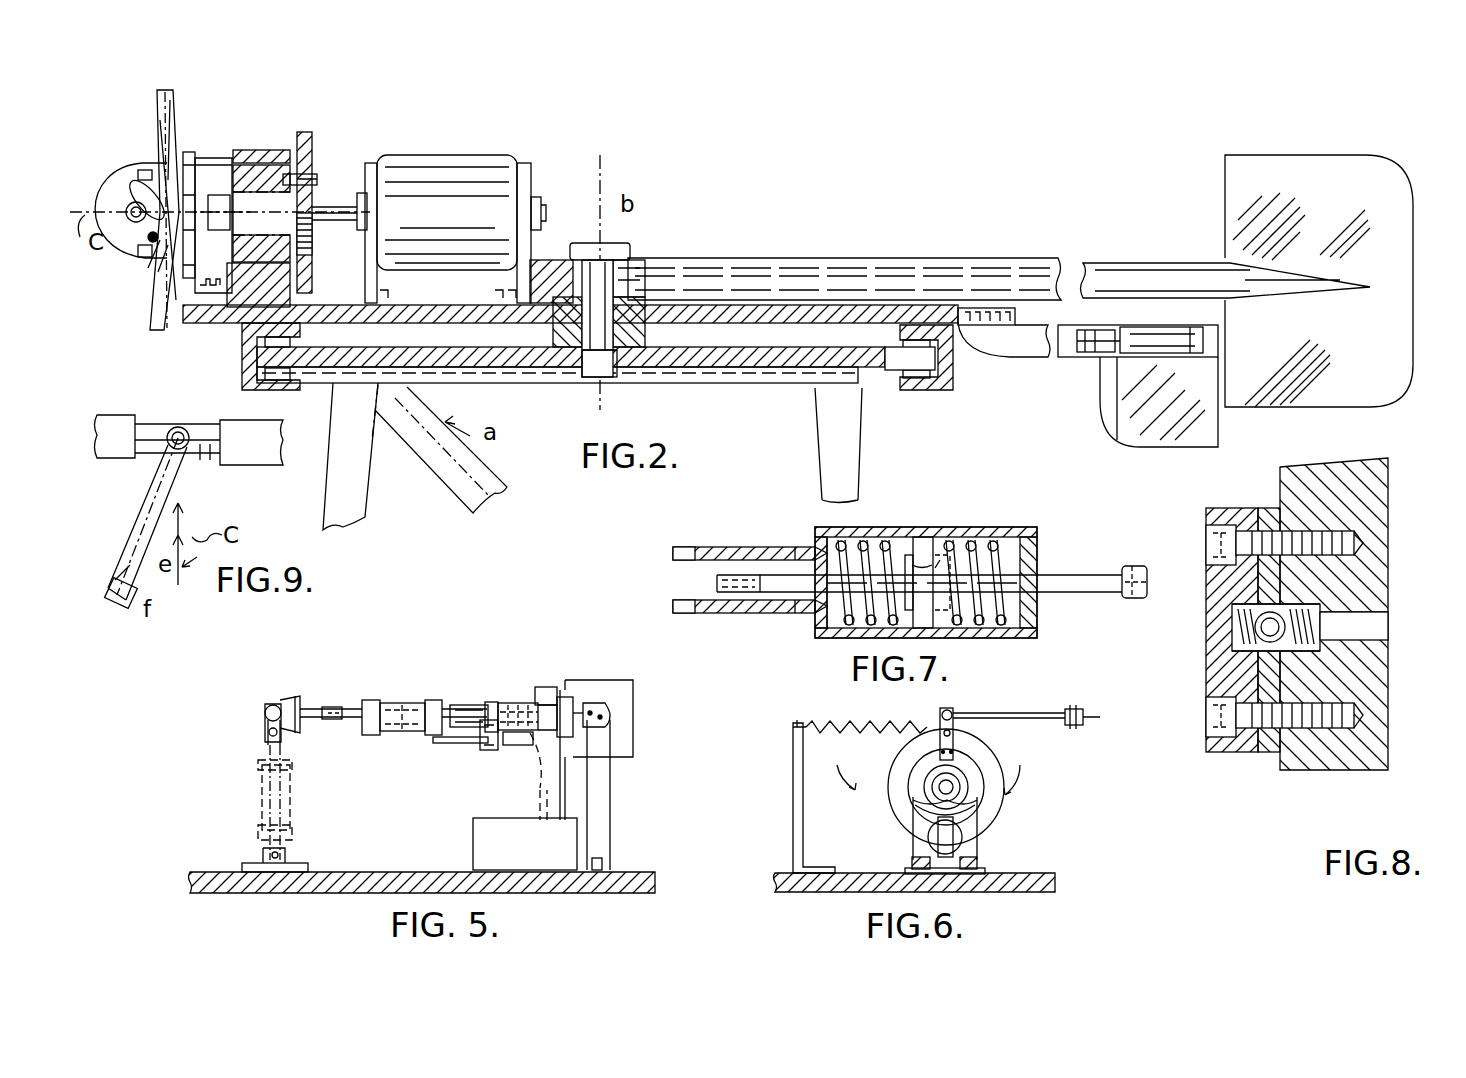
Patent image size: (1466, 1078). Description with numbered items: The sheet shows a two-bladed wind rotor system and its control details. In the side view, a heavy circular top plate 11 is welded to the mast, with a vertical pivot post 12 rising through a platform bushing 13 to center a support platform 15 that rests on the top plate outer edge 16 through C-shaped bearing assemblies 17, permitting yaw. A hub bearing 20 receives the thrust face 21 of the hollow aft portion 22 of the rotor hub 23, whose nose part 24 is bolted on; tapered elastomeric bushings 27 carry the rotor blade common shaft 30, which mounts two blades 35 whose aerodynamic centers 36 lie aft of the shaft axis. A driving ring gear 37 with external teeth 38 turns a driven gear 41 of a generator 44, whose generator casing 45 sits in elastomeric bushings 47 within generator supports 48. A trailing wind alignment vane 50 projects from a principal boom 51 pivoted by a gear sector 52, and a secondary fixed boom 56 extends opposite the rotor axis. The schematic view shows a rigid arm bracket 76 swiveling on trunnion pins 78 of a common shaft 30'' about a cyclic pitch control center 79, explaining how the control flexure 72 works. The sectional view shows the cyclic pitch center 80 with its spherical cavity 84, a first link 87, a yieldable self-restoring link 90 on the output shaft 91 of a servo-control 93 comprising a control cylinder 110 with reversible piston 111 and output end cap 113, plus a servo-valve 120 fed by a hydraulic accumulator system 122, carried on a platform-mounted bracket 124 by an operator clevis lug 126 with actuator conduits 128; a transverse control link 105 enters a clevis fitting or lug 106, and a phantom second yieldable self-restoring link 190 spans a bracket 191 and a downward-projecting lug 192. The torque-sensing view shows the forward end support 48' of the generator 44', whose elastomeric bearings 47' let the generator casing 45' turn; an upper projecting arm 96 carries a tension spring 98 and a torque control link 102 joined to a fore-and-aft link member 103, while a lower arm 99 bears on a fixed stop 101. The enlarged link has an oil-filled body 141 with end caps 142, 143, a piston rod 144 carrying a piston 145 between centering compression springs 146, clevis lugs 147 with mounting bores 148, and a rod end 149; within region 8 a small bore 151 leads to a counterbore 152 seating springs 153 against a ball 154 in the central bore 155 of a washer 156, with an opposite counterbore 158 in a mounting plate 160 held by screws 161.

In FIG. 2, the top plate 11 is at (527, 370).
In FIG. 2, the vertical pivot post 12 is at (605, 380).
In FIG. 2, the platform bushing 13 is at (645, 325).
In FIG. 2, the support platform 15 is at (195, 324).
In FIG. 2, the top plate outer edge 16 is at (262, 343).
In FIG. 2, the C-shaped bearing assemblies 17 is at (278, 391).
In FIG. 2, the hub bearing 20 is at (222, 152).
In FIG. 2, the thrust face 21 is at (214, 164).
In FIG. 2, the hollow aft portion 22 is at (245, 191).
In FIG. 2, the rotor hub 23 is at (291, 145).
In FIG. 2, the nose part 24 is at (122, 166).
In FIG. 2, the tapered elastomeric bushings 27 is at (136, 219).
In FIG. 2, the rotor blade common shaft 30 is at (191, 195).
In FIG. 2, the blades 35 is at (176, 112).
In FIG. 2, the aerodynamic centers 36 is at (153, 276).
In FIG. 2, the driving ring gear 37 is at (317, 176).
In FIG. 2, the external teeth 38 is at (312, 140).
In FIG. 2, the driven gear 41 is at (312, 252).
In FIG. 2, the generator 44 is at (447, 191).
In FIG. 2, the generator casing 45 is at (447, 215).
In FIG. 2, the elastomeric bushings 47 is at (446, 199).
In FIG. 2, the generator supports 48 is at (448, 233).
In FIG. 2, the trailing wind alignment vane 50 is at (1247, 281).
In FIG. 2, the principal boom 51 is at (935, 258).
In FIG. 2, the gear sector 52 is at (549, 258).
In FIG. 2, the secondary fixed boom 56 is at (1018, 357).
In FIG. 9, the rotor blade common shaft 30'' is at (183, 429).
In FIG. 9, the rigid arm bracket 76 is at (182, 509).
In FIG. 9, the trunnion pins 78 is at (180, 430).
In FIG. 9, the cyclic pitch control center 79 is at (186, 463).
In FIG. 5, the control flexure 72 is at (302, 695).
In FIG. 5, the cyclic pitch center 80 is at (266, 710).
In FIG. 5, the spherical cavity 84 is at (262, 728).
In FIG. 5, the first link 87 is at (300, 722).
In FIG. 5, the yieldable self-restoring link 90 is at (410, 693).
In FIG. 5, the output shaft 91 is at (483, 702).
In FIG. 5, the servo-control 93 is at (526, 694).
In FIG. 5, the transverse control link 105 is at (443, 741).
In FIG. 5, the clevis fitting or lug 106 is at (518, 745).
In FIG. 5, the control cylinder 110 is at (513, 693).
In FIG. 5, the reversible piston 111 is at (545, 756).
In FIG. 5, the output end cap 113 is at (485, 740).
In FIG. 5, the servo-valve 120 is at (570, 673).
In FIG. 5, the hydraulic accumulator system 122 is at (461, 842).
In FIG. 5, the platform-mounted bracket 124 is at (610, 848).
In FIG. 5, the operator clevis lug 126 is at (608, 703).
In FIG. 5, the actuator conduits 128 is at (552, 687).
In FIG. 5, the piston rod 144 is at (368, 728).
In FIG. 7, the piston rod 144 is at (730, 575).
In FIG. 5, the clevis lugs 147 is at (450, 707).
In FIG. 7, the clevis lugs 147 is at (742, 547).
In FIG. 5, the second yieldable self-restoring link 190 is at (303, 805).
In FIG. 5, the bracket 191 is at (295, 865).
In FIG. 5, the downward-projecting lug 192 is at (262, 732).
In FIG. 6, the tension spring 98 is at (893, 723).
In FIG. 6, the torque control link 102 is at (1009, 715).
In FIG. 6, the fore-and-aft link member 103 is at (1090, 715).
In FIG. 6, the upper projecting arm 96 is at (958, 733).
In FIG. 6, the generator casing 45' is at (928, 787).
In FIG. 6, the elastomeric bearings 47' is at (987, 771).
In FIG. 6, the generator 44' is at (992, 787).
In FIG. 6, the lower arm 99 is at (930, 841).
In FIG. 6, the forward end support 48' is at (976, 833).
In FIG. 6, the fixed stop 101 is at (980, 857).
In FIG. 7, the region 8— 8 is at (925, 560).
In FIG. 7, the hollow cylindrical oil-filled body 141 is at (998, 533).
In FIG. 7, the end cap 142 is at (1036, 551).
In FIG. 7, the end cap 143 is at (812, 542).
In FIG. 7, the piston 145 is at (930, 638).
In FIG. 8, the piston 145 is at (1388, 518).
In FIG. 7, the centering compression springs 146 is at (853, 628).
In FIG. 7, the mounting bores 148 is at (686, 547).
In FIG. 7, the rod end 149 is at (1132, 598).
In FIG. 7, the washer 156 is at (912, 547).
In FIG. 8, the washer 156 is at (1260, 746).
In FIG. 7, the mounting plate 160 is at (870, 540).
In FIG. 8, the mounting plate 160 is at (1260, 508).
In FIG. 8, the screws 161 is at (1205, 535).
In FIG. 8, the small bore 151 is at (1370, 635).
In FIG. 8, the counterbore 152 is at (1330, 607).
In FIG. 8, the springs 153 is at (1232, 644).
In FIG. 8, the ball 154 is at (1230, 598).
In FIG. 8, the central bore 155 is at (1258, 643).
In FIG. 8, the opposite counterbore 158 is at (1233, 622).